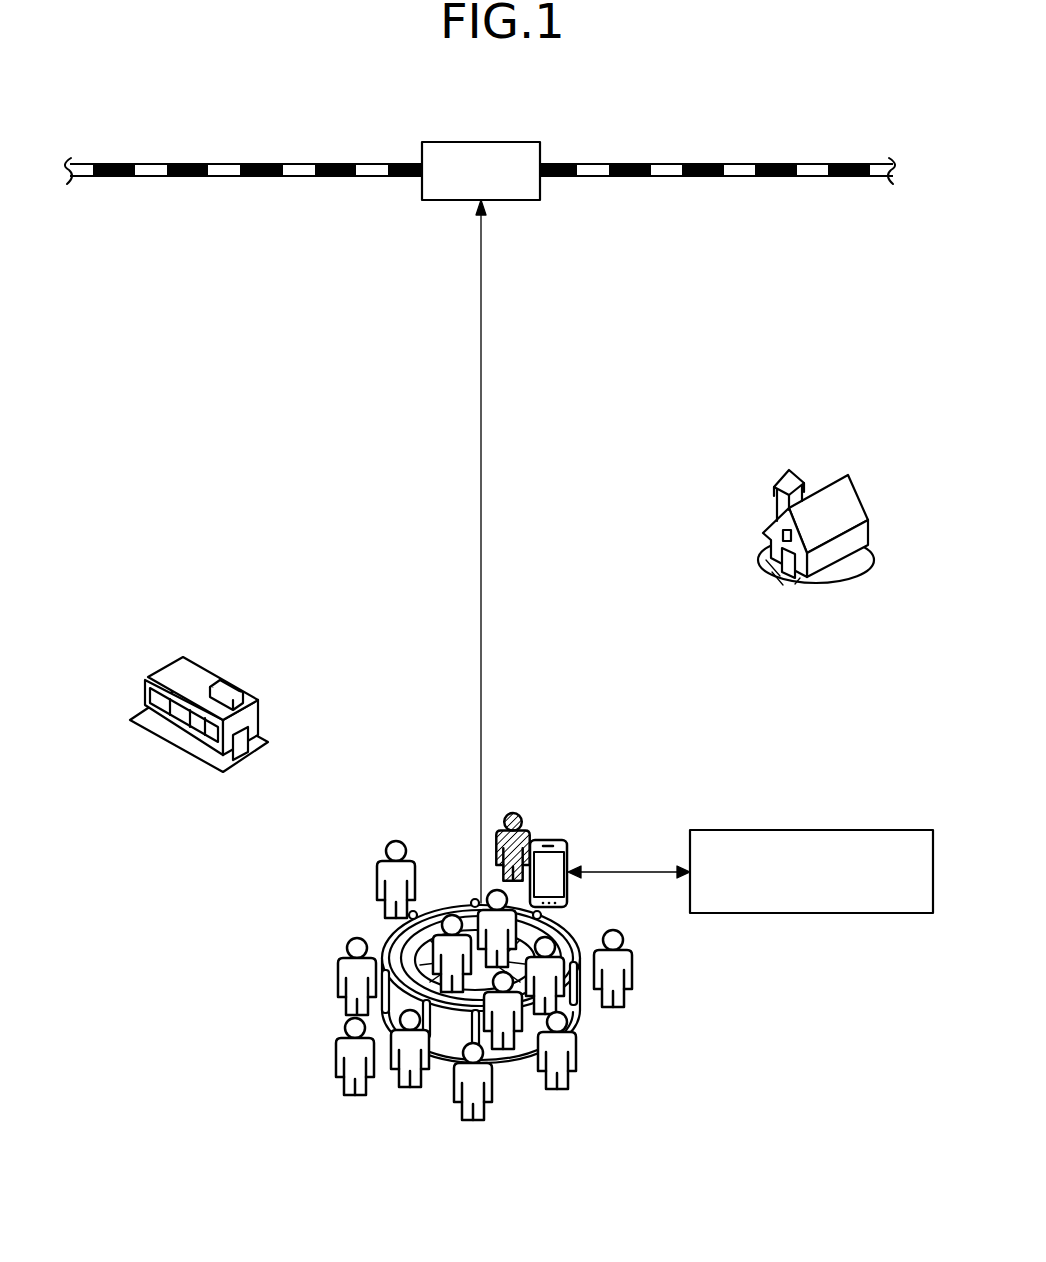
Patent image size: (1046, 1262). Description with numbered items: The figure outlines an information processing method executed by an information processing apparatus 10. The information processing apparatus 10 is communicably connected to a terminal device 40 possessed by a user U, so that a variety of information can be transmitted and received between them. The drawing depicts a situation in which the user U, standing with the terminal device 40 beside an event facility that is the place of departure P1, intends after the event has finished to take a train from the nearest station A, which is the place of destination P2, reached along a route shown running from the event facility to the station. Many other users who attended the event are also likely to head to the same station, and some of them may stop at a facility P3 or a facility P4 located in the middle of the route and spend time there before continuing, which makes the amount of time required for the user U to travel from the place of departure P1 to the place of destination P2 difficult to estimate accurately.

The place of departure P1 is at (393, 930).
The place of destination P2 is at (488, 142).
The facility P3 is at (202, 667).
The facility P4 is at (810, 490).
The user U is at (512, 812).
The terminal device 40 is at (545, 838).
The information processing apparatus 10 is at (855, 830).